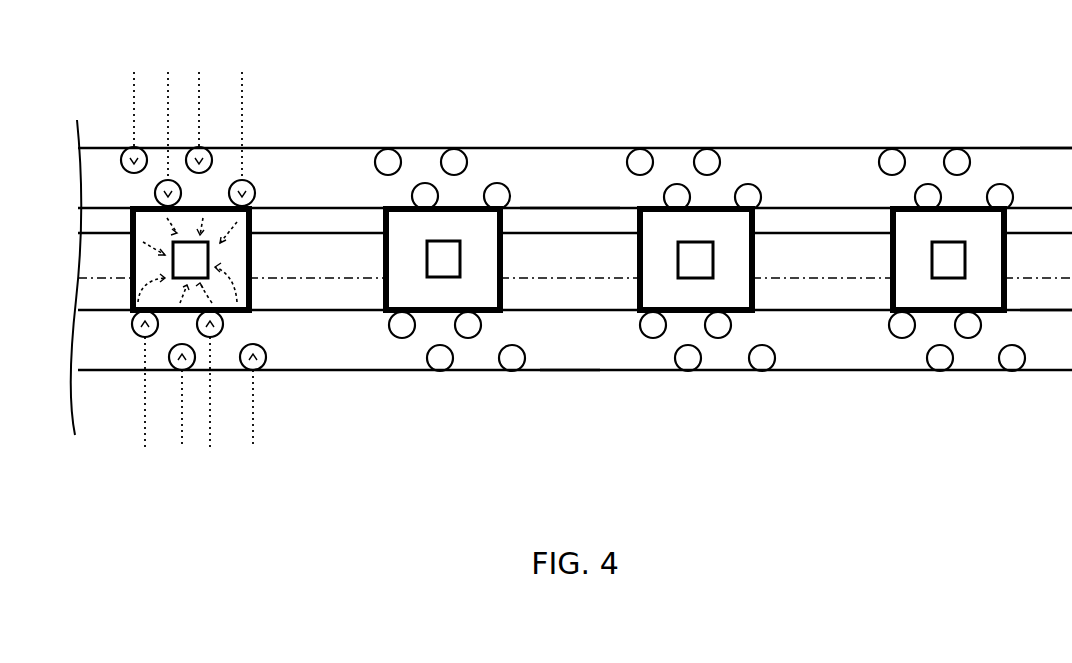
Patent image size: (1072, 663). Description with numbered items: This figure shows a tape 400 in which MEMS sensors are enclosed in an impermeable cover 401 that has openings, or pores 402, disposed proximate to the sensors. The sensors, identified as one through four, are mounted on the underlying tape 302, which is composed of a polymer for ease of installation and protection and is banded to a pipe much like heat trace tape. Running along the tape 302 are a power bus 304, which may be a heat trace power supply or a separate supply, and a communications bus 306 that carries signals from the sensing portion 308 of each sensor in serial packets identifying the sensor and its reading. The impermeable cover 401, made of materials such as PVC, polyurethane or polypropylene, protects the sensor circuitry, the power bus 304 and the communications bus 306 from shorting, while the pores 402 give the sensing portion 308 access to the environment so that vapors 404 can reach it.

The tape 400 is at (575, 340).
The impermeable cover 401 is at (568, 371).
The tape 302 is at (592, 207).
The power bus 304 is at (1070, 195).
The communications bus 306 is at (1071, 385).
The sensing portion 308 is at (444, 278).
The pores 402 is at (155, 193).
The vapors 404 is at (150, 58).